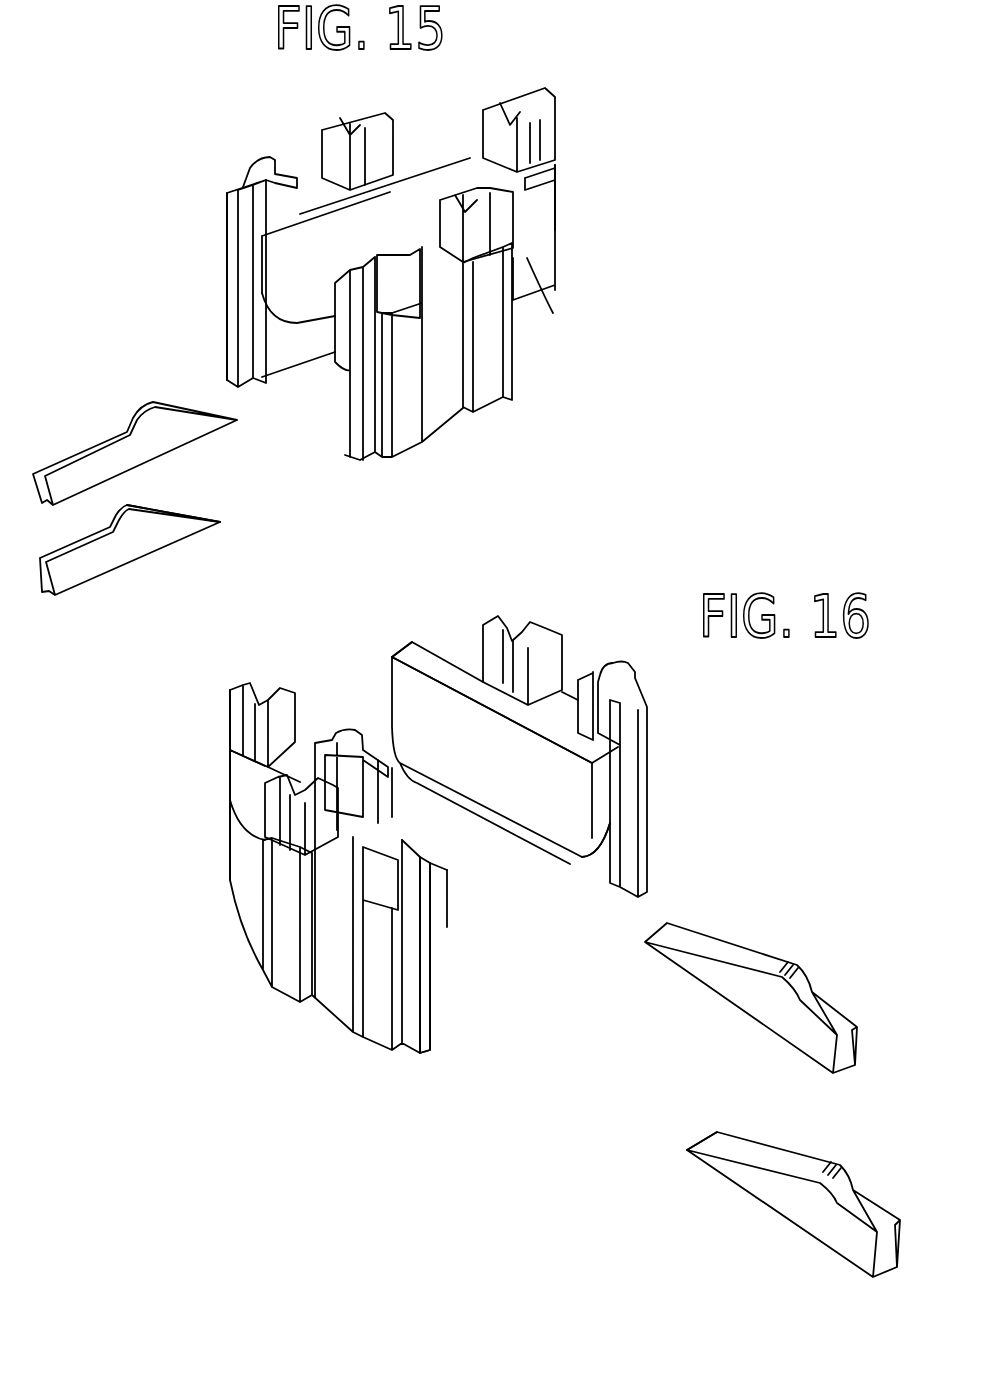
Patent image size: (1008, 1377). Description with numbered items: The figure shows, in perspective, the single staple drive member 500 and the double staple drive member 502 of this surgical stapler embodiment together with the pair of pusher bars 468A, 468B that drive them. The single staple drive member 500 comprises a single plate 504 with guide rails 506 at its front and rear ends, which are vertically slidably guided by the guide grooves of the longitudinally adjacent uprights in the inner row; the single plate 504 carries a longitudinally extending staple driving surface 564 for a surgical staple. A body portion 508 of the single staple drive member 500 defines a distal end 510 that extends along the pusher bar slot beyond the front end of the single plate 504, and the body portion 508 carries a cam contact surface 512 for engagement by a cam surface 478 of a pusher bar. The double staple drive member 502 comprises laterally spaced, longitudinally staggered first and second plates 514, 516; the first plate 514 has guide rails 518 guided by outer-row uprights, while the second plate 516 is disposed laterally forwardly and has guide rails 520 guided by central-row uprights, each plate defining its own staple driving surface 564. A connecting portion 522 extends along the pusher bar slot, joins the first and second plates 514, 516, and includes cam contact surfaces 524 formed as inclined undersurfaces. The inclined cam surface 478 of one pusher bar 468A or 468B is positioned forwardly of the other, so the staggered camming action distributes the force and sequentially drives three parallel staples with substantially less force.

In FIG. 15, the single staple drive member 500 is at (240, 135).
In FIG. 16, the single staple drive member 500 is at (456, 628).
In FIG. 16, the double staple drive member 502 is at (203, 915).
In FIG. 16, the single plate 504 is at (630, 657).
In FIG. 15, the guide rails 506 is at (355, 415).
In FIG. 16, the guide rails 506 is at (645, 778).
In FIG. 15, the body portion 508 is at (527, 258).
In FIG. 16, the body portion 508 is at (417, 689).
In FIG. 15, the distal end 510 is at (558, 176).
In FIG. 16, the distal end 510 is at (397, 650).
In FIG. 16, the cam contact surface 512 is at (580, 868).
In FIG. 15, the first plate 514 is at (222, 217).
In FIG. 16, the first plate 514 is at (335, 985).
In FIG. 15, the second plate 516 is at (570, 151).
In FIG. 16, the second plate 516 is at (222, 747).
In FIG. 15, the guide rails 518 is at (230, 276).
In FIG. 16, the guide rails 518 is at (432, 1000).
In FIG. 15, the guide rails 520 is at (563, 122).
In FIG. 16, the guide rails 520 is at (238, 722).
In FIG. 15, the connecting portion 522 is at (322, 207).
In FIG. 16, the connecting portion 522 is at (268, 772).
In FIG. 15, the cam contact surfaces 524 is at (300, 325).
In FIG. 15, the staple driving surface 564 is at (508, 128).
In FIG. 16, the staple driving surface 564 is at (530, 628).
In FIG. 15, the pusher bar 468A is at (97, 468).
In FIG. 16, the pusher bar 468A is at (783, 1192).
In FIG. 15, the pusher bar 468B is at (97, 555).
In FIG. 16, the pusher bar 468B is at (742, 983).
In FIG. 15, the cam surface 478 is at (165, 507).
In FIG. 16, the cam surface 478 is at (718, 1137).